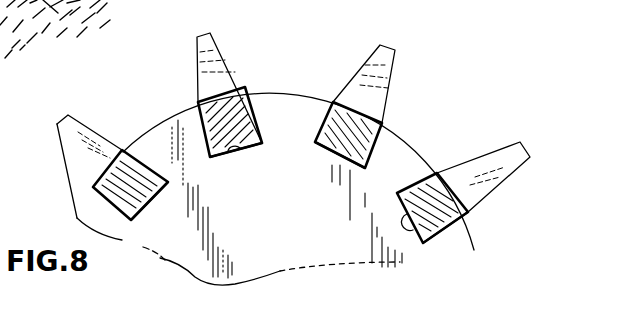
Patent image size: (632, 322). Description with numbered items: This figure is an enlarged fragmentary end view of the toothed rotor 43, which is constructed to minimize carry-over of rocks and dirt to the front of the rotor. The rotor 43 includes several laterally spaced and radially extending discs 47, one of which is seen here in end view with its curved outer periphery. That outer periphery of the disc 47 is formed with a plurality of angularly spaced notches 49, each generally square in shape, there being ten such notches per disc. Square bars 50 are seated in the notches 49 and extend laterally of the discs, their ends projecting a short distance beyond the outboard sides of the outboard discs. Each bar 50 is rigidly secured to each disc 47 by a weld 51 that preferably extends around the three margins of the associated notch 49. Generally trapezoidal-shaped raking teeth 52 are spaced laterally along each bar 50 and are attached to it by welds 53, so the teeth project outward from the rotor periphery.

The toothed rotor 43 is at (303, 90).
The disc 47 is at (395, 153).
The notch 49 is at (242, 150).
The square bar 50 is at (213, 128).
The weld 51 is at (152, 204).
The raking tooth 52 is at (72, 145).
The weld 53 is at (98, 180).